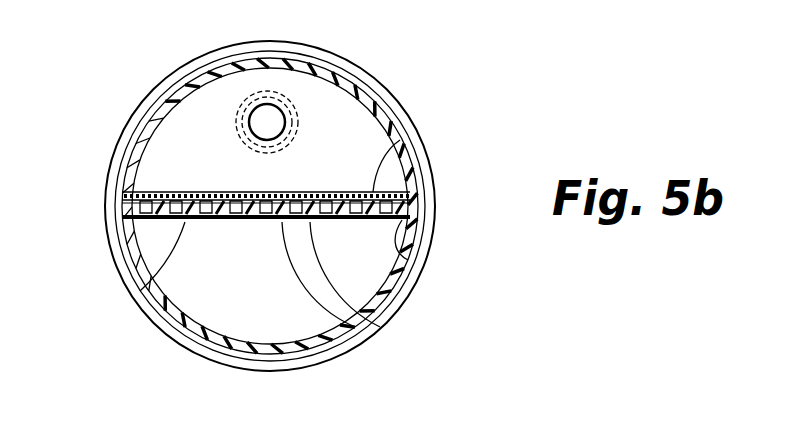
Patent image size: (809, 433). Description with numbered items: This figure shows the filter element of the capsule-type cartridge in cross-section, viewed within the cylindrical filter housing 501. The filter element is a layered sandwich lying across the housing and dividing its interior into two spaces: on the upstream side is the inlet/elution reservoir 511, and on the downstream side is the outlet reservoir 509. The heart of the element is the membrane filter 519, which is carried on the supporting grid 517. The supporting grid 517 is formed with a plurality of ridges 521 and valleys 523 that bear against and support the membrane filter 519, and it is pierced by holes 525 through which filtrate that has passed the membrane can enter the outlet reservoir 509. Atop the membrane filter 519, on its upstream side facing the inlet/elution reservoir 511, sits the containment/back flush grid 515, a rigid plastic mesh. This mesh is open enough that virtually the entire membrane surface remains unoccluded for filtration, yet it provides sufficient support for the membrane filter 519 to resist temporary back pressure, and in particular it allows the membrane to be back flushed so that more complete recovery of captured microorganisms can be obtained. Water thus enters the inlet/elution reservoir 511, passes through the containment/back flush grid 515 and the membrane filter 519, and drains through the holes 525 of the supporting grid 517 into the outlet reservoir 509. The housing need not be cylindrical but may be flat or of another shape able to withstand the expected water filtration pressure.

The cylindrical filter housing 501 is at (121, 101).
The outlet reservoir 509 is at (223, 290).
The inlet/elution reservoir 511 is at (307, 97).
The containment/back flush grid 515 is at (400, 143).
The supporting grid 517 is at (407, 256).
The membrane filter 519 is at (118, 194).
The ridges 521 is at (140, 291).
The valleys 523 is at (122, 247).
The holes 525 is at (378, 336).